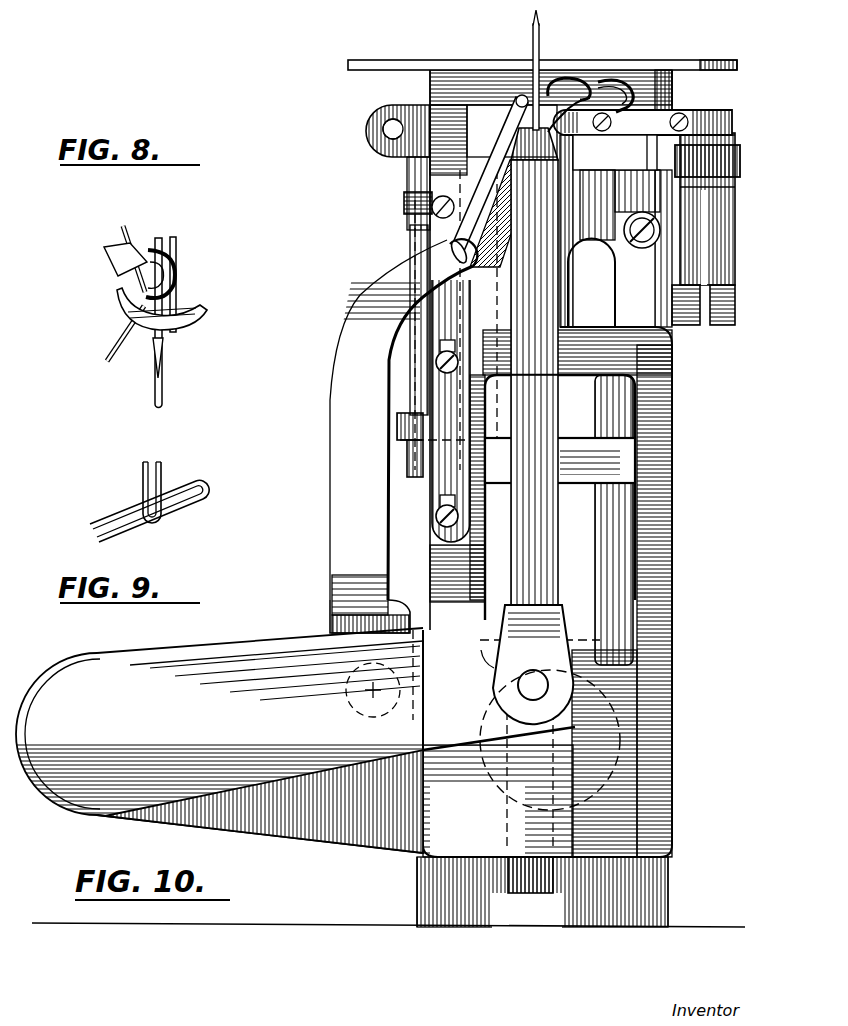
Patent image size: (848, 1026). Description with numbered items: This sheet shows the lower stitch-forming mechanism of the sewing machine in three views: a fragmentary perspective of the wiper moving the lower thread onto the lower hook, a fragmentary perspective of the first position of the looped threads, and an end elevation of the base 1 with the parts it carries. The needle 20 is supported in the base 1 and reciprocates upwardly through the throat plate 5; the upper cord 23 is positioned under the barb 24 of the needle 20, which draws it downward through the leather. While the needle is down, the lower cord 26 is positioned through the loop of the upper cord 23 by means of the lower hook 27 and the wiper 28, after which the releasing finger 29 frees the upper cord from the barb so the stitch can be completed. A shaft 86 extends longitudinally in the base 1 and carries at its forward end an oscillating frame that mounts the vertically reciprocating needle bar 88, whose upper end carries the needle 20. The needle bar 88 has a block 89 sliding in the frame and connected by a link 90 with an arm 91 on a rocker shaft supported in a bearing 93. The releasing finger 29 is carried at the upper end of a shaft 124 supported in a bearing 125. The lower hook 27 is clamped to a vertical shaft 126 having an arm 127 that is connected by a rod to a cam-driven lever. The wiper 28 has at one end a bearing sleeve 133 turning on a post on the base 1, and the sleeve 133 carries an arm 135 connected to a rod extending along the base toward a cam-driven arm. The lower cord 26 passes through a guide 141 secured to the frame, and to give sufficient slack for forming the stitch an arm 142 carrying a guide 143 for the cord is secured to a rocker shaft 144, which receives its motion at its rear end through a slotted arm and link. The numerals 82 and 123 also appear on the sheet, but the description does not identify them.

In FIG. 10, the base 1 is at (605, 907).
In FIG. 10, the throat plate 5 is at (380, 65).
In FIG. 10, the needle 20 is at (541, 52).
In FIG. 8, the needle 20 is at (165, 387).
In FIG. 8, the upper cord 23 is at (178, 254).
In FIG. 9, the upper cord 23 is at (163, 474).
In FIG. 10, the barb 24 is at (531, 30).
In FIG. 8, the barb 24 is at (152, 366).
In FIG. 8, the lower cord 26 is at (138, 238).
In FIG. 9, the lower cord 26 is at (193, 506).
In FIG. 10, the lower hook 27 is at (575, 82).
In FIG. 8, the lower hook 27 is at (174, 281).
In FIG. 10, the wiper 28 is at (620, 74).
In FIG. 8, the wiper 28 is at (201, 327).
In FIG. 10, the releasing finger 29 is at (583, 130).
In FIG. 10, the needle bar carrier 82 is at (545, 155).
In FIG. 10, the shaft 86 is at (539, 755).
In FIG. 10, the needle bar 88 is at (528, 893).
In FIG. 10, the block 89 is at (637, 493).
In FIG. 10, the link 90 is at (478, 602).
In FIG. 10, the arm 91 is at (265, 658).
In FIG. 10, the bearing 93 is at (348, 842).
In FIG. 10, the stop nuts 123 is at (722, 316).
In FIG. 10, the shaft 124 is at (693, 252).
In FIG. 10, the bearing 125 is at (738, 178).
In FIG. 10, the vertical shaft 126 is at (418, 172).
In FIG. 10, the arm 127 is at (400, 428).
In FIG. 10, the bearing sleeve 133 is at (672, 104).
In FIG. 10, the arm 135 is at (617, 166).
In FIG. 10, the guide 141 is at (503, 117).
In FIG. 10, the arm 142 is at (362, 300).
In FIG. 10, the guide 143 is at (449, 250).
In FIG. 10, the rocker shaft 144 is at (350, 674).